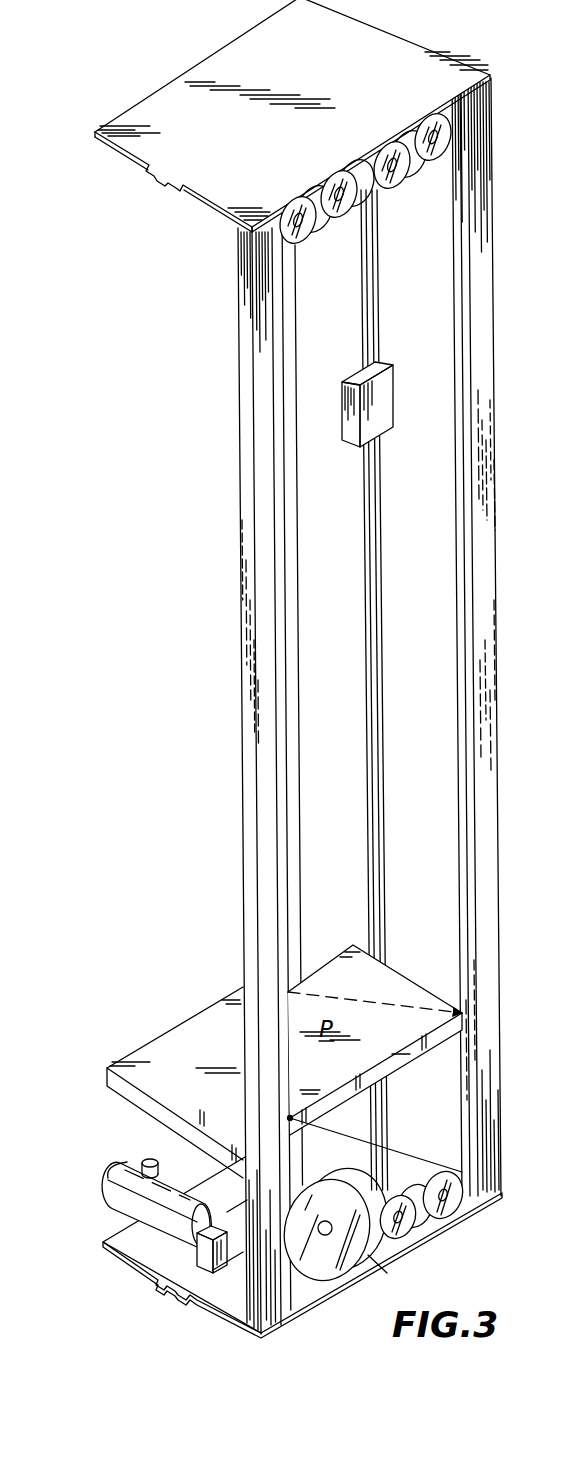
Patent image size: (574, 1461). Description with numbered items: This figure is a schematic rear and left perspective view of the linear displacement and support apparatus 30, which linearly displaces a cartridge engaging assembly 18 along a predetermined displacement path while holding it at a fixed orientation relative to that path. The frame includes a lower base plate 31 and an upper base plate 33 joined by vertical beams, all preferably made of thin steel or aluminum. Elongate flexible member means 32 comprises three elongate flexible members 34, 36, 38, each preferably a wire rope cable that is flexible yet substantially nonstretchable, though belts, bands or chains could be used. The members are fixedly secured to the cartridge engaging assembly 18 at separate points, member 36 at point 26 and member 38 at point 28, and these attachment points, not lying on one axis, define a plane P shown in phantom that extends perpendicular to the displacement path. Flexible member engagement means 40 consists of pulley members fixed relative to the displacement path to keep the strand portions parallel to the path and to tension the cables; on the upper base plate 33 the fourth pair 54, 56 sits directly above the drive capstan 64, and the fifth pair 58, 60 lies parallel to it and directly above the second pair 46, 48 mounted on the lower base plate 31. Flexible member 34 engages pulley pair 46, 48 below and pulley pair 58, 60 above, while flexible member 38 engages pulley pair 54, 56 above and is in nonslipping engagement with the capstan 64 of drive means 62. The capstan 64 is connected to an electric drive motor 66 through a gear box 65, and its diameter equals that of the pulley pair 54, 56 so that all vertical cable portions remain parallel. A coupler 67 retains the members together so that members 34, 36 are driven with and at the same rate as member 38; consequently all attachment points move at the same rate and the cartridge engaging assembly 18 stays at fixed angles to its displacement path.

The linear displacement and support apparatus 30 is at (110, 72).
The upper base plate 33 is at (428, 36).
The elongate flexible member means 32 is at (358, 572).
The elongate flexible member 34 is at (381, 626).
The elongate flexible member 36 is at (373, 662).
The elongate flexible member 38 is at (364, 647).
The flexible member engagement means 40 is at (322, 232).
The pulley member 54 is at (310, 200).
The pulley member 56 is at (346, 164).
The pulley member 58 is at (392, 140).
The pulley member 60 is at (432, 112).
The coupler 67 is at (392, 368).
The cartridge engaging assembly 18 is at (198, 1025).
The point 26 is at (462, 1010).
The point 28 is at (290, 1116).
The drive means 62 is at (165, 1250).
The electric drive motor 66 is at (122, 1187).
The gear box 65 is at (212, 1264).
The capstan 64 is at (340, 1253).
The lower base plate 31 is at (368, 1255).
The pulley member 48 is at (407, 1237).
The pulley member 46 is at (450, 1202).